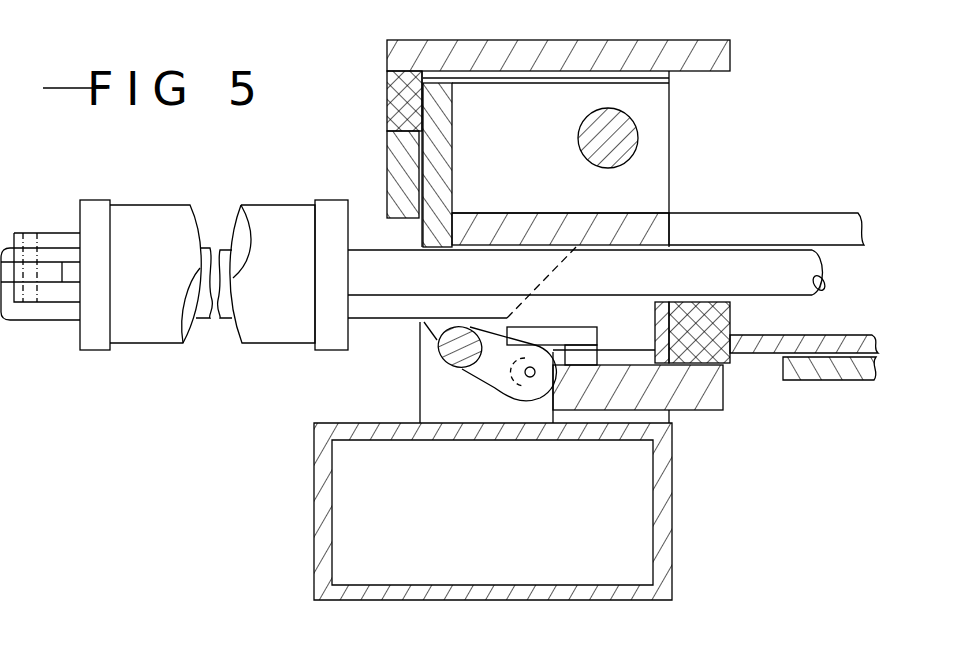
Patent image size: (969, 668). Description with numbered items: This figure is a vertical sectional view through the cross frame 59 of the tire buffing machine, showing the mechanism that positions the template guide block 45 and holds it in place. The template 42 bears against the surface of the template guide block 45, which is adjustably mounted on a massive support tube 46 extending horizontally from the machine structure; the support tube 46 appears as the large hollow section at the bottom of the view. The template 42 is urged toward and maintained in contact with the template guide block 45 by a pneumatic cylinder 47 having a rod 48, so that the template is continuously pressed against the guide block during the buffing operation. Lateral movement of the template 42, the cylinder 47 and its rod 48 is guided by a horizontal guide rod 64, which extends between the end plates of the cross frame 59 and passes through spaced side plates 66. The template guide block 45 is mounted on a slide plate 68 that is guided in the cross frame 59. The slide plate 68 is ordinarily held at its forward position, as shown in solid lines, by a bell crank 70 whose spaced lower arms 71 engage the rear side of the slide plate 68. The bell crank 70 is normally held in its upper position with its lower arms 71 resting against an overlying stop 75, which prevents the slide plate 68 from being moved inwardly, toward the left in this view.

The template 42 is at (832, 335).
The template guide block 45 is at (734, 321).
The support tube 46 is at (673, 473).
The pneumatic cylinder 47 is at (163, 206).
The rod 48 is at (731, 246).
The cross frame 59 is at (372, 50).
The horizontal guide rod 64 is at (640, 137).
The side plates 66 is at (670, 178).
The slide plate 68 is at (724, 387).
The bell crank 70 is at (432, 350).
The lower arms 71 is at (480, 378).
The stop 75 is at (565, 326).